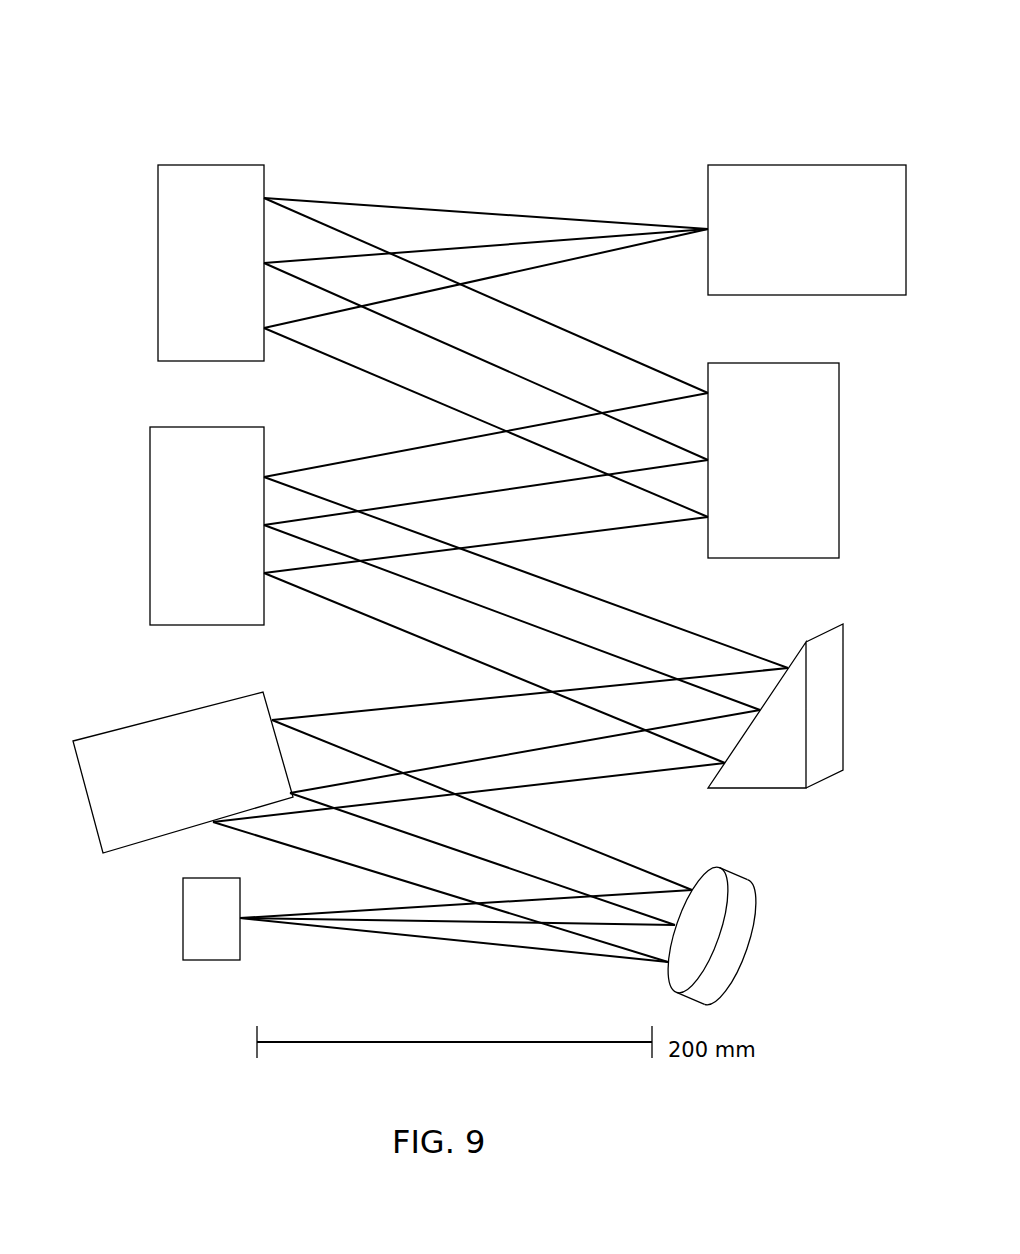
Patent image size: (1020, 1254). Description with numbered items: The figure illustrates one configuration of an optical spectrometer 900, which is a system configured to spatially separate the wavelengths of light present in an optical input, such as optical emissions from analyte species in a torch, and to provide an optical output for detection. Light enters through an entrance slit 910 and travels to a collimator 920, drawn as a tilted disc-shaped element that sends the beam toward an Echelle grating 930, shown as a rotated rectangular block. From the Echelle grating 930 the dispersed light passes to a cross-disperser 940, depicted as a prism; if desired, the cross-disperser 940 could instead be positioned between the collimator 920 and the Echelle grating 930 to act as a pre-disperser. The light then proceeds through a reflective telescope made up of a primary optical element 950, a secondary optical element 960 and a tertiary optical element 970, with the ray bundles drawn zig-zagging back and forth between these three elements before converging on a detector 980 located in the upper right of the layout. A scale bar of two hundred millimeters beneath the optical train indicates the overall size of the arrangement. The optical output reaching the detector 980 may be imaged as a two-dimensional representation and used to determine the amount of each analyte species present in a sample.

The optical spectrometer 900 is at (448, 74).
The entrance slit 910 is at (183, 920).
The collimator 920 is at (748, 948).
The Echelle grating 930 is at (85, 798).
The cross-disperser 940 is at (843, 716).
The primary optical element 950 is at (150, 525).
The secondary optical element 960 is at (839, 463).
The tertiary optical element 970 is at (158, 263).
The detector 980 is at (807, 295).